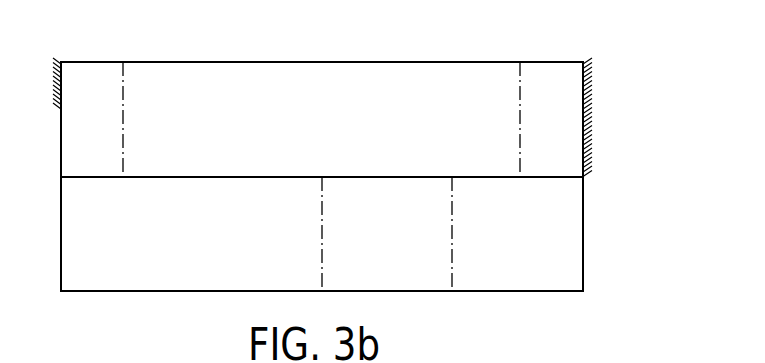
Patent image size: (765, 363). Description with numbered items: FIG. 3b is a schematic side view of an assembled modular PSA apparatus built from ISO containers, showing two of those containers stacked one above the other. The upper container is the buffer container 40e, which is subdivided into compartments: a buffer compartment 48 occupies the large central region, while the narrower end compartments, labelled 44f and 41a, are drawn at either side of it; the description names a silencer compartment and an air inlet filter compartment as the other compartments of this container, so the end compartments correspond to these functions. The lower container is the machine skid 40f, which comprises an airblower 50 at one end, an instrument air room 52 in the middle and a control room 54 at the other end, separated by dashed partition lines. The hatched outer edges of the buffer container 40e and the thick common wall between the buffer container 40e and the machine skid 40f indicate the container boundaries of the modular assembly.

The buffer container 40e is at (588, 152).
The machine skid 40f is at (585, 243).
The panel segment 44f is at (120, 138).
The buffer compartment 48 is at (332, 137).
The panel segment 41a is at (566, 138).
The airblower 50 is at (205, 257).
The instrument air room 52 is at (404, 256).
The control room 54 is at (536, 257).